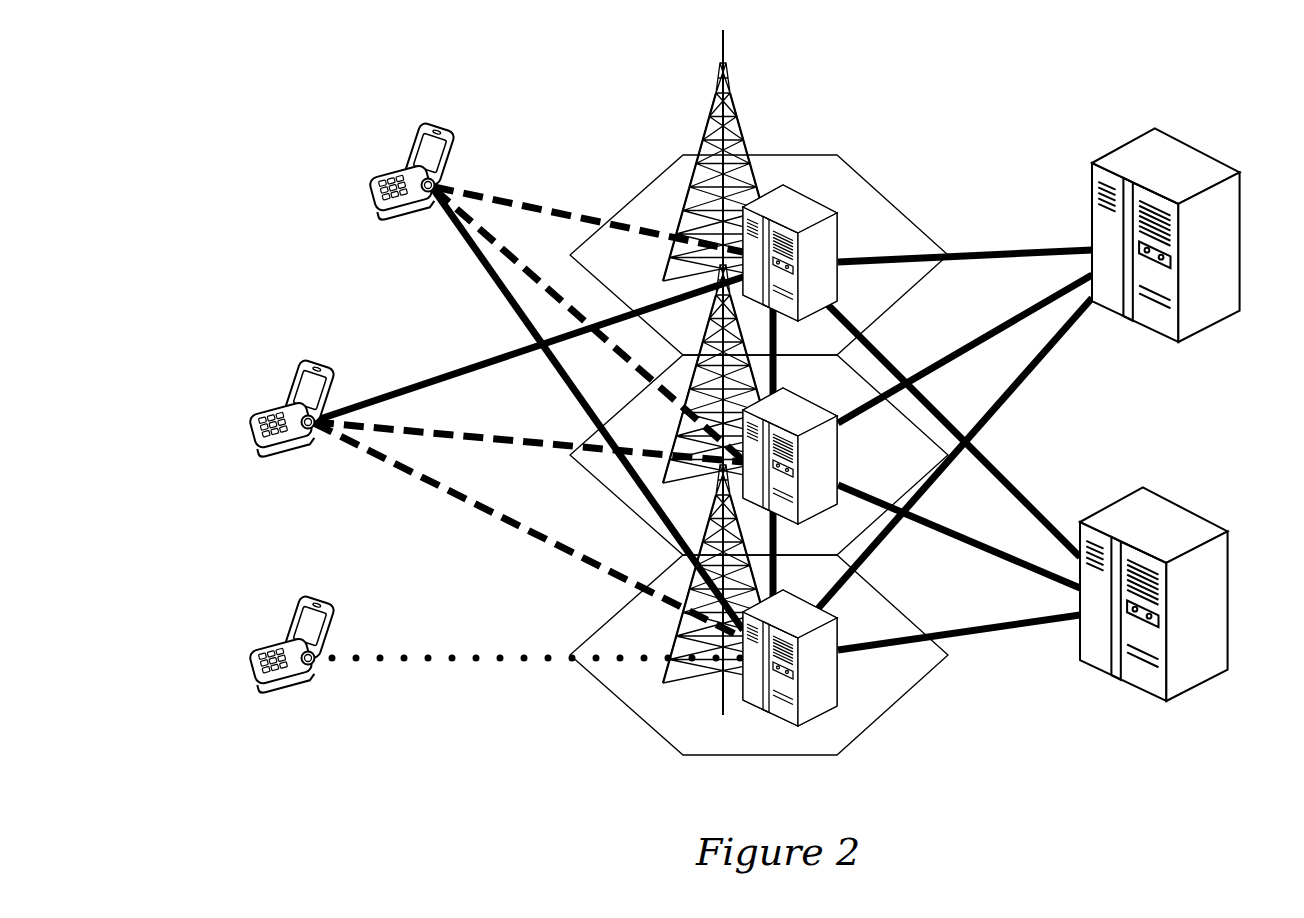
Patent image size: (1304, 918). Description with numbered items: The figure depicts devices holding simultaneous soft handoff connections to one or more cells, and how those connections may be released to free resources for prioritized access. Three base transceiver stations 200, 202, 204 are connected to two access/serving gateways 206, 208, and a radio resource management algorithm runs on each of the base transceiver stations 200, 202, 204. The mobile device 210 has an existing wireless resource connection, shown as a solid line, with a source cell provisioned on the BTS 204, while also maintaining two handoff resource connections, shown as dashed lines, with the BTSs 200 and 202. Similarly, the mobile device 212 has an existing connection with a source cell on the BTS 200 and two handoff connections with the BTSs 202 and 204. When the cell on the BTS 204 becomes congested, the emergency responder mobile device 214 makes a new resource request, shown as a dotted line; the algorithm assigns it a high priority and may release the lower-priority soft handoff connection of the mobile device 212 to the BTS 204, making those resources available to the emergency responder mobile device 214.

The base transceiver station 200 is at (742, 192).
The base transceiver station 202 is at (758, 393).
The base transceiver station 204 is at (758, 593).
The access/serving gateway 206 is at (1166, 200).
The access/serving gateway 208 is at (1154, 564).
The mobile device 210 is at (375, 171).
The mobile device 212 is at (257, 408).
The emergency responder mobile device 214 is at (225, 647).